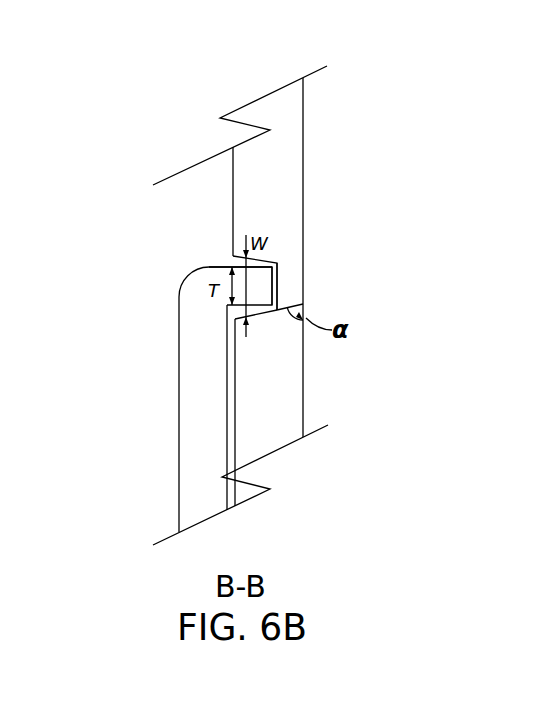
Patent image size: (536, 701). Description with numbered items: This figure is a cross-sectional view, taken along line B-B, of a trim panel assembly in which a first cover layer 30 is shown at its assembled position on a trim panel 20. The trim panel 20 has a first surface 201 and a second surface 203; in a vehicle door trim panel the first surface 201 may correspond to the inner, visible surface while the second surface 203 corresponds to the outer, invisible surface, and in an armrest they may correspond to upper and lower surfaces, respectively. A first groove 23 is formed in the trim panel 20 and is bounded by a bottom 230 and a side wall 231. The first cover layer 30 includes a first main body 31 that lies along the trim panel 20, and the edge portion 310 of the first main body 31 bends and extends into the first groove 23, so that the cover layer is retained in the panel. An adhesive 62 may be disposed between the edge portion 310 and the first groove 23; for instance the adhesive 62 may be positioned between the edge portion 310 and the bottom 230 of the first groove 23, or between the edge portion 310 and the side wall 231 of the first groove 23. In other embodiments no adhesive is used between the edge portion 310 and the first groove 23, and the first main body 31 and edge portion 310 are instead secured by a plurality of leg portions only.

The trim panel 20 is at (264, 305).
The first surface 201 is at (233, 228).
The second surface 203 is at (305, 163).
The first groove 23 is at (264, 307).
The bottom of the first groove 230 is at (280, 272).
The side wall of the first groove 231 is at (263, 313).
The adhesive 62 is at (277, 288).
The edge portion 310 is at (262, 293).
The first cover layer 30 is at (247, 399).
The first main body 31 is at (197, 397).